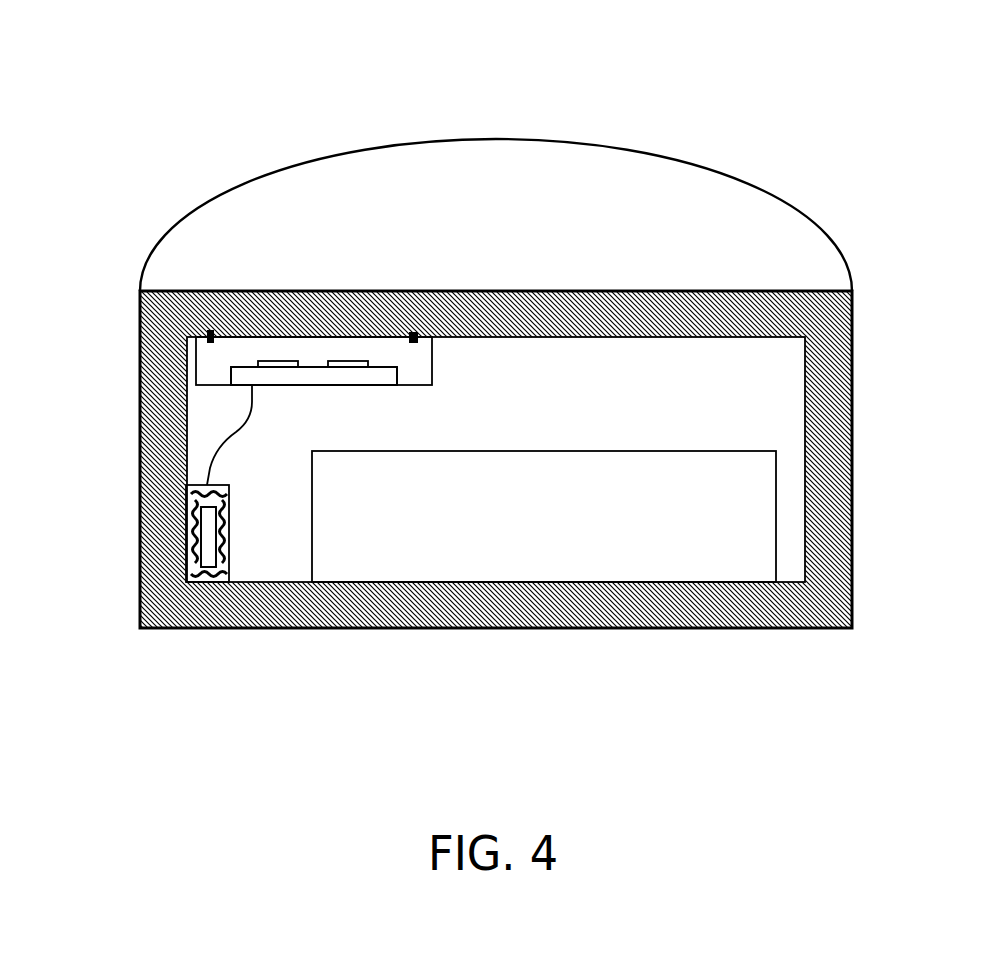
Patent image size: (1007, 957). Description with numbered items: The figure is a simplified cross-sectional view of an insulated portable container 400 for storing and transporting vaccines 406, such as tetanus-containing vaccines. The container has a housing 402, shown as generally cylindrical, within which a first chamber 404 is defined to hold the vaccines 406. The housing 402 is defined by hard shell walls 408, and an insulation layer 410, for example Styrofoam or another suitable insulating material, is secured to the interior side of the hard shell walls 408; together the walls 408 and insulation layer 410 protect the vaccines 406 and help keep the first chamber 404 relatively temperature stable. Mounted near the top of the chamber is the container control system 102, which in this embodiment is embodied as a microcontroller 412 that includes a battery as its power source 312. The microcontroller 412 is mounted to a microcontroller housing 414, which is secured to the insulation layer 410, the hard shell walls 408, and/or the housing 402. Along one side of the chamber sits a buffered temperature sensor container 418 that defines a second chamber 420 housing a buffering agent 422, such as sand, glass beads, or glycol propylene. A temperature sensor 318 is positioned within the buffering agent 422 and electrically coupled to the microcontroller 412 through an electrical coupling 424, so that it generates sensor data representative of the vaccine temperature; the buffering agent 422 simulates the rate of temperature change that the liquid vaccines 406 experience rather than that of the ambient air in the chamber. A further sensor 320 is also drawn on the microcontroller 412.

The insulated portable container 400 is at (485, 118).
The housing 402 is at (854, 459).
The first chamber 404 is at (778, 357).
The vaccines 406 is at (712, 450).
The hard shell walls 408 is at (728, 208).
The insulation layer 410 is at (433, 360).
The microcontroller 412 is at (398, 377).
The container control system 102 is at (314, 376).
The microcontroller housing 414 is at (413, 336).
The buffered temperature sensor container 418 is at (230, 573).
The second chamber 420 is at (227, 525).
The buffering agent 422 is at (227, 557).
The electrical coupling 424 is at (240, 430).
The power source 312 is at (348, 361).
The temperature sensor 318 is at (213, 508).
The sensor 320 is at (284, 361).